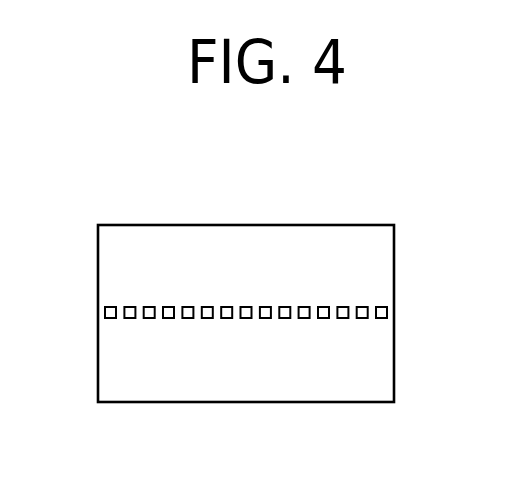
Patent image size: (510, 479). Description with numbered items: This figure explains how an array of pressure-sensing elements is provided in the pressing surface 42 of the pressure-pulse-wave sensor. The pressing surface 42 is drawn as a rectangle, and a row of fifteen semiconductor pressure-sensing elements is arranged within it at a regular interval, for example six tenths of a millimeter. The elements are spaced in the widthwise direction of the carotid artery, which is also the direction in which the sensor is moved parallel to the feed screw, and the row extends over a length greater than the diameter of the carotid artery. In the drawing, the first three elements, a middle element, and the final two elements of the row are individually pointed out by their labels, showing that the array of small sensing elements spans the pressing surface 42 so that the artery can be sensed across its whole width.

The pressing surface 42 is at (290, 233).